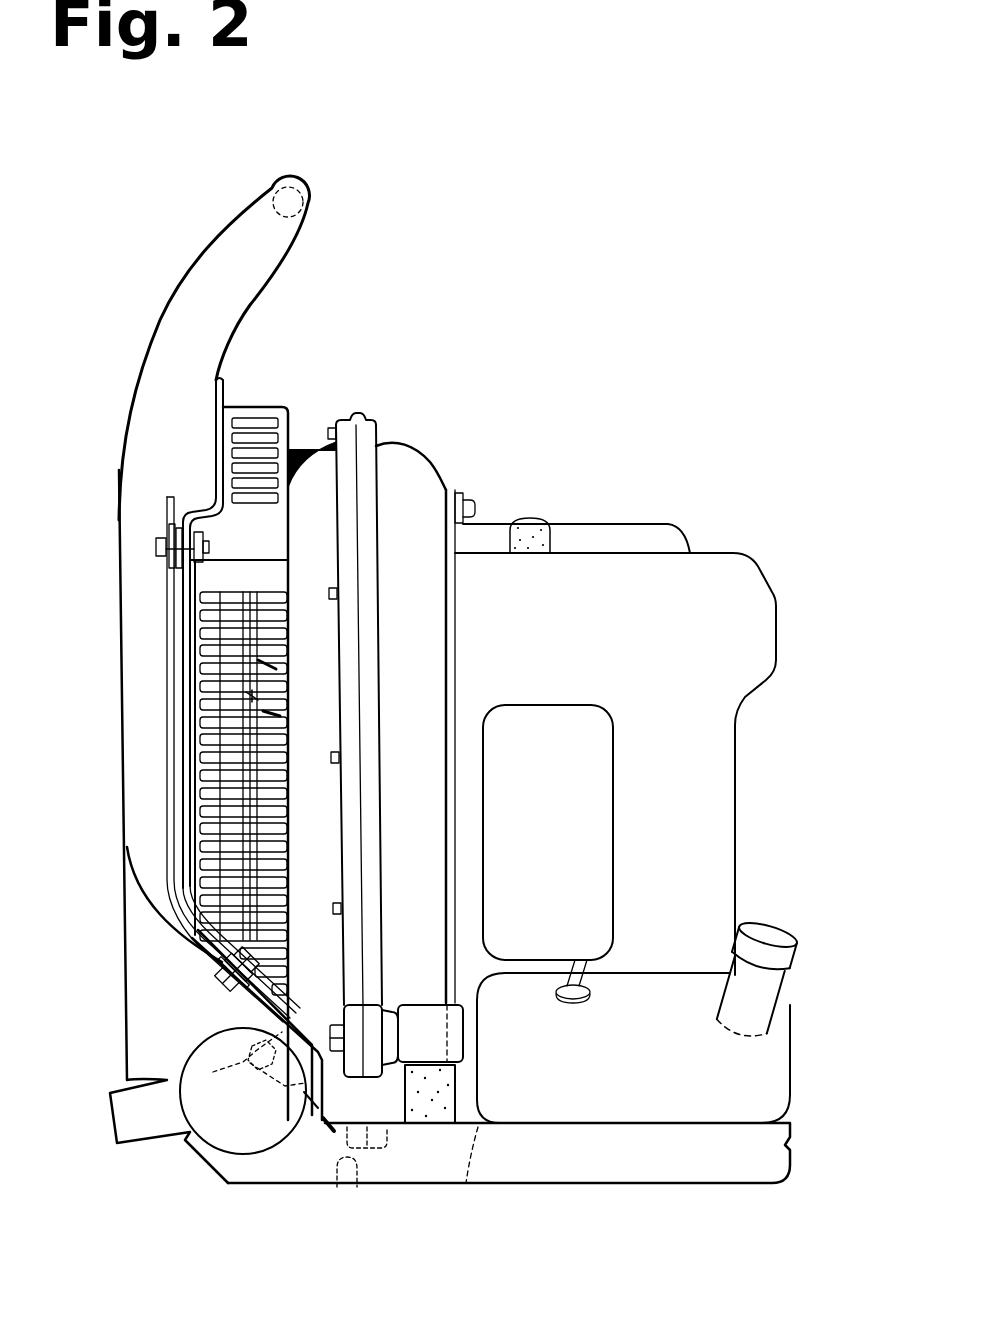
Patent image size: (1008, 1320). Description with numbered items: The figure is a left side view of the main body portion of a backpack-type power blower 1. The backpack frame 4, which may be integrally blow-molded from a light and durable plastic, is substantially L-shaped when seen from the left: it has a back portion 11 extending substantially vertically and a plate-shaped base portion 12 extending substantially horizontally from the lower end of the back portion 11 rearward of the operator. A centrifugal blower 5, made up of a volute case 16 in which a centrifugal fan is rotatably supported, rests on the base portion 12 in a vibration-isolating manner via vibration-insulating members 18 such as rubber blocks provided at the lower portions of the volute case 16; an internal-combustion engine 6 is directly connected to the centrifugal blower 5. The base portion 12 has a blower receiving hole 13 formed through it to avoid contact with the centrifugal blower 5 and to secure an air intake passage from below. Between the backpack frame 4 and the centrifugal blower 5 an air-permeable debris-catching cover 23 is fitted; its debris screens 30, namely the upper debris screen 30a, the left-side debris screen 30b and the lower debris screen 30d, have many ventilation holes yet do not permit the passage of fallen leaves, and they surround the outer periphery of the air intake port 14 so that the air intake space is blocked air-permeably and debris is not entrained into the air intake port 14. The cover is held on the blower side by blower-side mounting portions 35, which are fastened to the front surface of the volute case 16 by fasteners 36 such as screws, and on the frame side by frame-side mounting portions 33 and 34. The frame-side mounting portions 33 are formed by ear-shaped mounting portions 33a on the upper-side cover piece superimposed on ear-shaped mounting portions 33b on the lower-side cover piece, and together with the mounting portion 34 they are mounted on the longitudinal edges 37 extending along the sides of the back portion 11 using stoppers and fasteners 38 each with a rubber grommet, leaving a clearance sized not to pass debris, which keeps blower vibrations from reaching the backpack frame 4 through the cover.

The backpack-type power blower 1 is at (594, 342).
The backpack frame 4 is at (133, 315).
The centrifugal blower 5 is at (420, 446).
The internal-combustion engine 6 is at (633, 520).
The back portion 11 is at (112, 490).
The base portion 12 is at (530, 1190).
The blower receiving hole 13 is at (335, 1150).
The air intake port 14 is at (235, 790).
The volute case 16 is at (306, 445).
The vibration-insulating members 18 is at (442, 1103).
The debris-catching cover 23 is at (274, 398).
The debris screens 30 is at (200, 794).
The upper debris screen 30a is at (256, 460).
The left-side debris screen 30b is at (205, 842).
The lower debris screen 30d is at (307, 1122).
The frame-side mounting portions 33 is at (60, 587).
The ear-shaped mounting portions 33a is at (183, 550).
The ear-shaped mounting portions 33b is at (177, 548).
The frame-side mounting portion 34 is at (220, 975).
The blower-side mounting portions 35 is at (270, 667).
The fasteners 36 is at (243, 1091).
The longitudinal edges 37 is at (172, 720).
The fasteners 38 is at (150, 549).